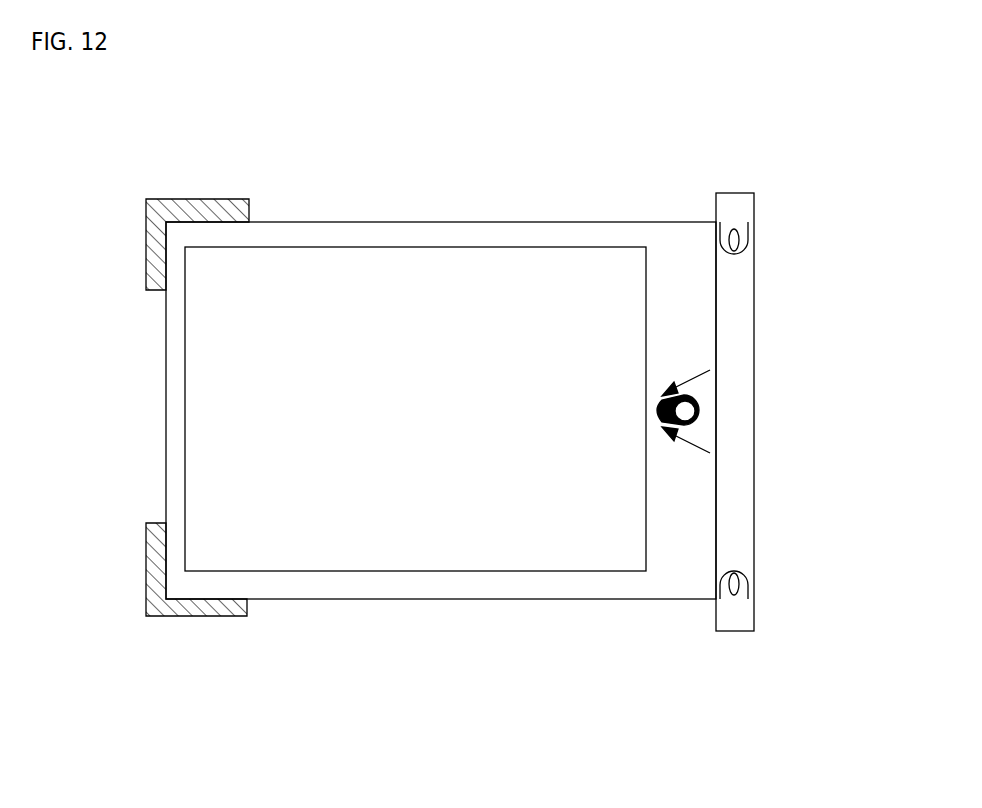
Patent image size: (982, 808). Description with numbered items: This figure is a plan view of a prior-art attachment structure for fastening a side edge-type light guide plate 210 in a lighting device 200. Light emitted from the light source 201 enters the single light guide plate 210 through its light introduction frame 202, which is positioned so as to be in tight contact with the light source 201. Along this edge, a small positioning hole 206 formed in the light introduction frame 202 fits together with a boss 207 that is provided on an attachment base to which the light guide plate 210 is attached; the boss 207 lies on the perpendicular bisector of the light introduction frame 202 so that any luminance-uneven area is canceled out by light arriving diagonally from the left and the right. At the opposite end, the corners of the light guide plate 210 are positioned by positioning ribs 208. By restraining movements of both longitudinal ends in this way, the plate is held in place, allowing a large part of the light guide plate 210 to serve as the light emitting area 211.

The lighting device 200 is at (774, 146).
The light source 201 is at (747, 517).
The light introduction frame 202 is at (713, 500).
The small positioning hole 206 is at (695, 413).
The boss 207 is at (690, 403).
The positioning ribs 208 is at (193, 199).
The light guide plate 210 is at (500, 600).
The light emitting area 211 is at (367, 548).